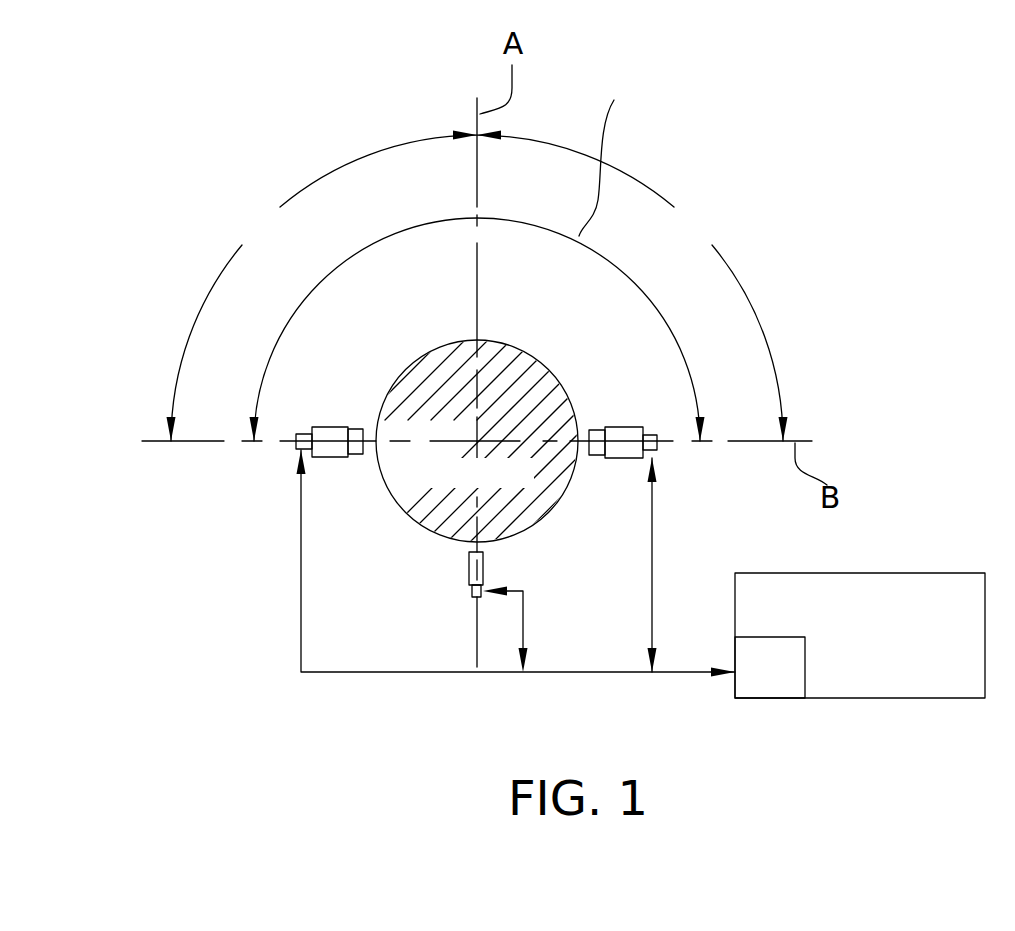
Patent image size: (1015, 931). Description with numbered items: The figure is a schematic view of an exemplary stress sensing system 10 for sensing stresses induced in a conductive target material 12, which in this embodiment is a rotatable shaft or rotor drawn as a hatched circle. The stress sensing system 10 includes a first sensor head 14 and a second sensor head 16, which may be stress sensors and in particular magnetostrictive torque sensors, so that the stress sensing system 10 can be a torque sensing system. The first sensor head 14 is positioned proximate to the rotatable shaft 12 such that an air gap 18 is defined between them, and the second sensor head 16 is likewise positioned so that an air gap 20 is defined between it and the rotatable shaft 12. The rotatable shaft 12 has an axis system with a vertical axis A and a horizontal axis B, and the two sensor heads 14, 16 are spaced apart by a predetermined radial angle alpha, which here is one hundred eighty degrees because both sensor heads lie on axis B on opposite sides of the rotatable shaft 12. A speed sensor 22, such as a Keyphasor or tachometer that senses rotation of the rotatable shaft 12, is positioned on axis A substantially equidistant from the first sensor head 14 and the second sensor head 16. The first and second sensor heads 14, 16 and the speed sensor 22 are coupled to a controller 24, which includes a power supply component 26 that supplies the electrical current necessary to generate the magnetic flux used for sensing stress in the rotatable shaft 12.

The stress sensing system 10 is at (762, 110).
The conductive target material 12 is at (407, 519).
The first sensor head 14 is at (326, 400).
The second sensor head 16 is at (632, 395).
The air gap 18 is at (371, 400).
The air gap 20 is at (588, 400).
The speed sensor 22 is at (484, 566).
The controller 24 is at (917, 663).
The power supply component 26 is at (749, 683).